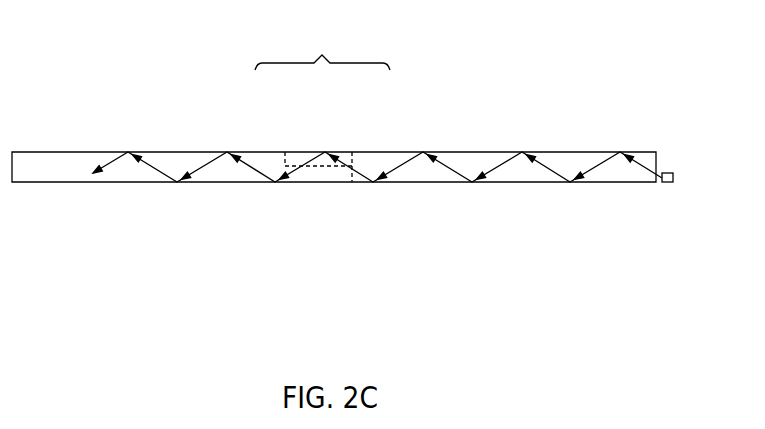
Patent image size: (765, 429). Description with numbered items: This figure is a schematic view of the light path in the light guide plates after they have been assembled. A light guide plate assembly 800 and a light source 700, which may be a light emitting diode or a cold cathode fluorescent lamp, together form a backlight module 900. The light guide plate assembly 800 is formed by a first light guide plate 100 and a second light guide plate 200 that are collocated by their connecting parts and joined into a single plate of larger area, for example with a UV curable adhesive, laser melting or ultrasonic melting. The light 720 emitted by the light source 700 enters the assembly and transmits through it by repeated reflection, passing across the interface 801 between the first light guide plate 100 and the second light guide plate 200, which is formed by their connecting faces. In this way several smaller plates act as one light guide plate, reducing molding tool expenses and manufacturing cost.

The backlight module 900 is at (47, 25).
The first light guide plate 100 is at (195, 160).
The second light guide plate 200 is at (457, 158).
The light guide plate assembly 800 is at (322, 50).
The interface 801 is at (308, 167).
The light 720 is at (643, 167).
The light source 700 is at (674, 177).